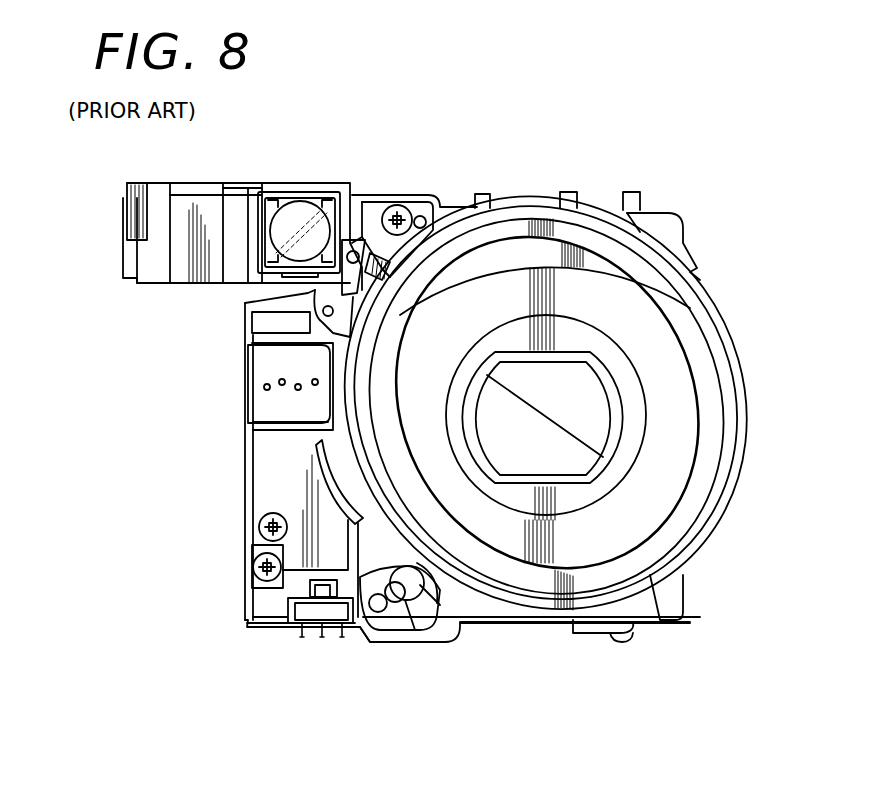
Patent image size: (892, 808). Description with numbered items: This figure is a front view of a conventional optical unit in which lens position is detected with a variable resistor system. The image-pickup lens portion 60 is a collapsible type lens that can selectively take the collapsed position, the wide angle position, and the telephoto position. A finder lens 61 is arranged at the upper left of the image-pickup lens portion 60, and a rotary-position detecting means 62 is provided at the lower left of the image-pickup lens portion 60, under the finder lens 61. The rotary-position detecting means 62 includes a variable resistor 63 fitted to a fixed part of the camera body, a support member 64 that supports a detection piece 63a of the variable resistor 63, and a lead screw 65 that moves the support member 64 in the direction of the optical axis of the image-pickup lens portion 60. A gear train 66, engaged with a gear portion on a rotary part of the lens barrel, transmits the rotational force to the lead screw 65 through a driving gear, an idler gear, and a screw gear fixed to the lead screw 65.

The image-pickup lens portion 60 is at (527, 196).
The finder lens 61 is at (298, 222).
The rotary-position detecting means 62 is at (352, 640).
The variable resistor 63 is at (290, 633).
The detection piece 63a is at (312, 590).
The support member 64 is at (332, 638).
The lead screw 65 is at (383, 618).
The gear train 66 is at (407, 600).